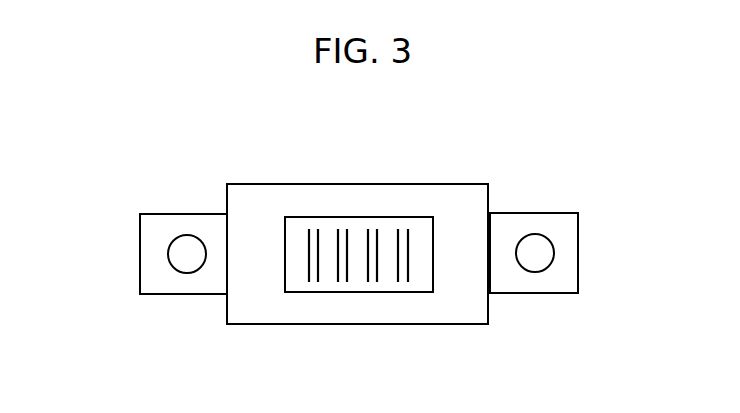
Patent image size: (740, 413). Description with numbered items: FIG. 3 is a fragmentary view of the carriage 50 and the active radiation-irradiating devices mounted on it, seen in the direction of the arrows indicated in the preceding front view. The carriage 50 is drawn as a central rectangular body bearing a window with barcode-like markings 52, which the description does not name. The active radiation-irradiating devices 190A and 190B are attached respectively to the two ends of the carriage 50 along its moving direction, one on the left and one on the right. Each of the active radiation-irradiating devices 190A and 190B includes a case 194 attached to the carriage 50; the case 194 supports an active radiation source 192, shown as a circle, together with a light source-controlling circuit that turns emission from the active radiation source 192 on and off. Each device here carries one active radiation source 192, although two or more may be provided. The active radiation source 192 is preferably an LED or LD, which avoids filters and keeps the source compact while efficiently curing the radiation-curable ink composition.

The carriage 50 is at (437, 313).
The barcode label 52 is at (373, 294).
The active radiation-irradiating device 190A is at (176, 209).
The active radiation-irradiating device 190B is at (540, 207).
The active radiation source 192 is at (187, 260).
The case 194 is at (140, 289).